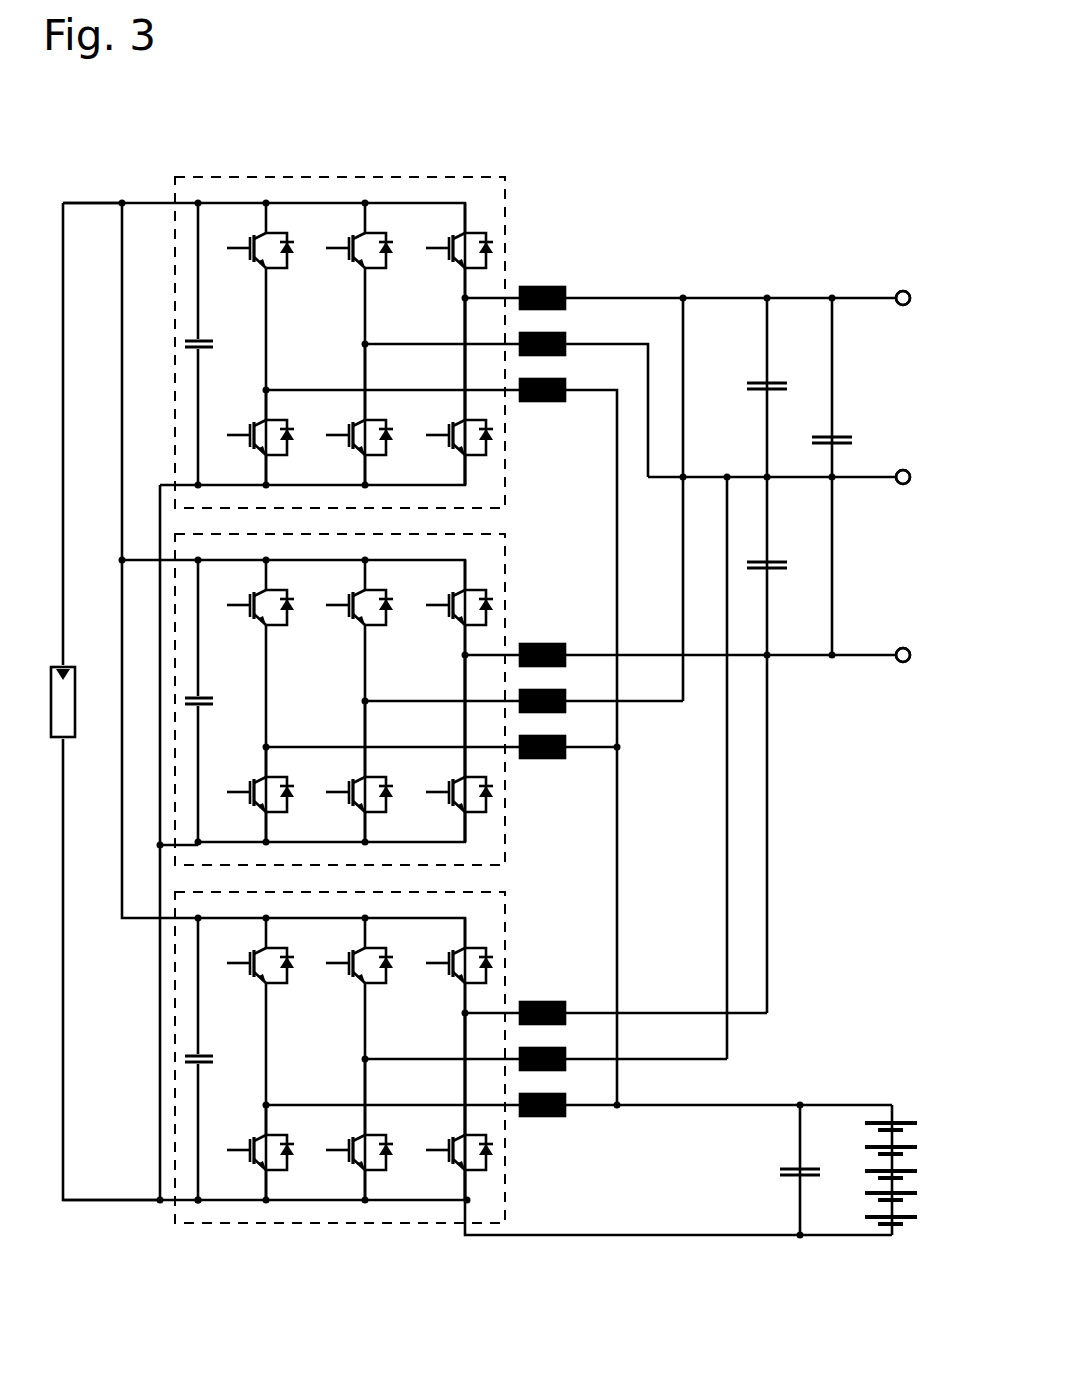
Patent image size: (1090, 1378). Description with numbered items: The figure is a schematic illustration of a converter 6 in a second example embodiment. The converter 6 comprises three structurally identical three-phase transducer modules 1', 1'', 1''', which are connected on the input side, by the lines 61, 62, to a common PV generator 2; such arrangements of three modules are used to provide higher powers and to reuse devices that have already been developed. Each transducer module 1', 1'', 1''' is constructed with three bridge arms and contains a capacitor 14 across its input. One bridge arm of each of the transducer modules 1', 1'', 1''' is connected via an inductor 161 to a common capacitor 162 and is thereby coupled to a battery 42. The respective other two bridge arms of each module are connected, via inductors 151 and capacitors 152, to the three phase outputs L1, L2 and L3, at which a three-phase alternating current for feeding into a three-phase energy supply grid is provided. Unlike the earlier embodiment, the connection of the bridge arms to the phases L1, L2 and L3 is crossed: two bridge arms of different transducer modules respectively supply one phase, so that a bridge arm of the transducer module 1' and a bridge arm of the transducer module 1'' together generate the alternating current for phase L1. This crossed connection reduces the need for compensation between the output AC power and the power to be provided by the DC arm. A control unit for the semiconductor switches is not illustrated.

The converter 6 is at (288, 132).
The first three-phase transducer module 1' is at (368, 323).
The second three-phase transducer module 1'' is at (372, 680).
The third three-phase transducer module 1''' is at (376, 1038).
The capacitor 14 is at (205, 338).
The inductors 151 is at (568, 333).
The inductors 161 is at (550, 400).
The capacitors 152 is at (827, 438).
The common capacitor 162 is at (795, 1180).
The battery 42 is at (890, 1225).
The PV generator 2 is at (66, 665).
The input line 61 is at (73, 200).
The input line 62 is at (110, 1205).
The phase output L1 is at (902, 308).
The phase output L2 is at (902, 487).
The phase output L3 is at (902, 665).